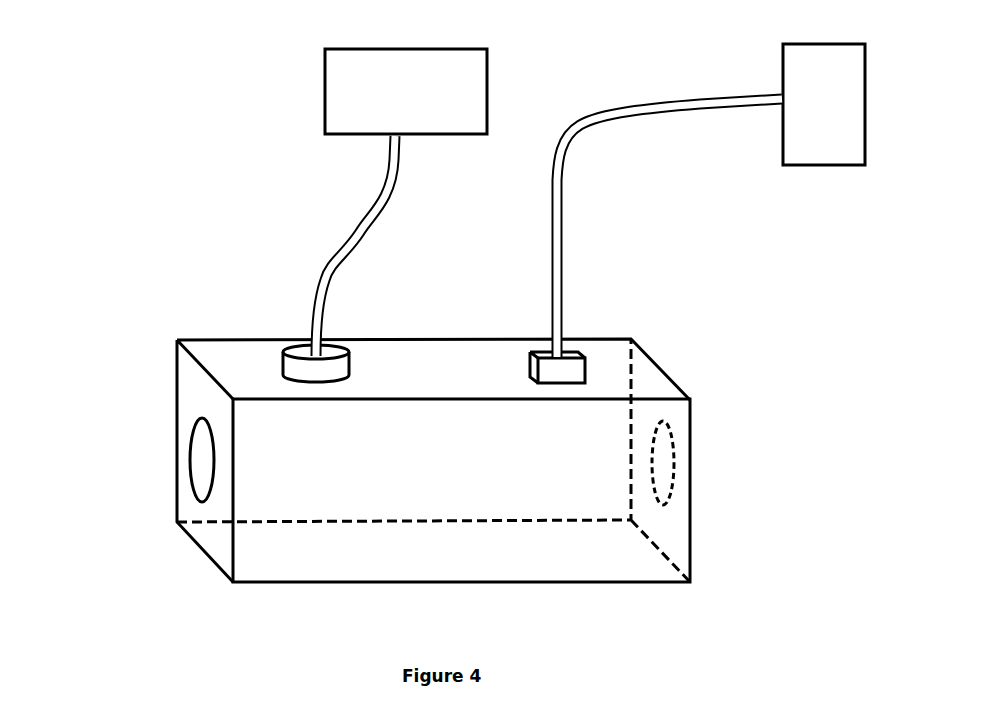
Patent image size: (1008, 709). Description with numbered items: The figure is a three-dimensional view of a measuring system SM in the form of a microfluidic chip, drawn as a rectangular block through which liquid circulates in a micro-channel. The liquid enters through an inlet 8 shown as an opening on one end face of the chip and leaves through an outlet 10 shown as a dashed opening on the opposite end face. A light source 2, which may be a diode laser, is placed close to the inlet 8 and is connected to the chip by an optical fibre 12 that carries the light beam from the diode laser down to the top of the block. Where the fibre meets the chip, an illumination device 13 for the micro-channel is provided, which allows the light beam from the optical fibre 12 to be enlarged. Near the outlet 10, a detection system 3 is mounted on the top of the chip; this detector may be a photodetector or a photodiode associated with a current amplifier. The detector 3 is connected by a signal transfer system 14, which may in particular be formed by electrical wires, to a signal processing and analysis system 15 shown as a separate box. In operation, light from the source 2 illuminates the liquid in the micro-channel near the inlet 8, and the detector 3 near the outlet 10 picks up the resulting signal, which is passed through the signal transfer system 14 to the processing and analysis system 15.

The light source 2 is at (325, 93).
The detection system 3 is at (586, 360).
The inlet 8 is at (192, 490).
The outlet 10 is at (673, 468).
The optical fibre 12 is at (325, 273).
The illumination device 13 is at (280, 362).
The signal transfer system 14 is at (608, 112).
The signal processing and analysis system 15 is at (782, 166).
The measuring system SM is at (428, 547).